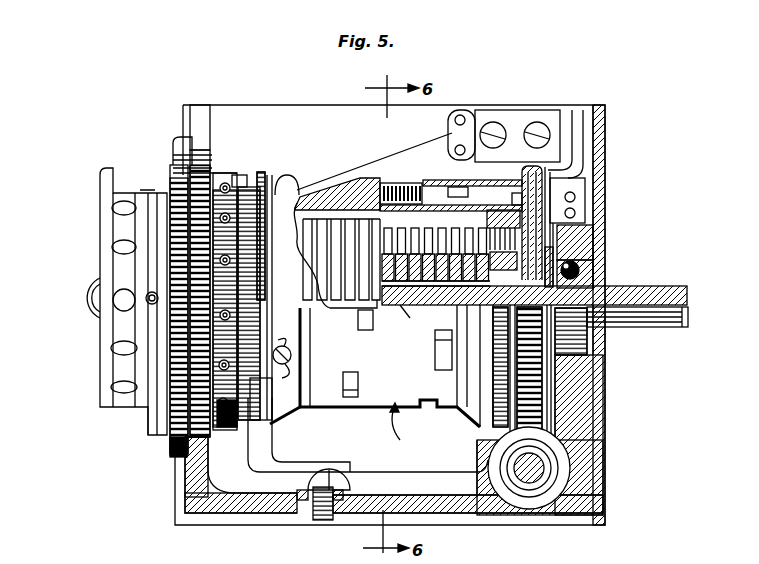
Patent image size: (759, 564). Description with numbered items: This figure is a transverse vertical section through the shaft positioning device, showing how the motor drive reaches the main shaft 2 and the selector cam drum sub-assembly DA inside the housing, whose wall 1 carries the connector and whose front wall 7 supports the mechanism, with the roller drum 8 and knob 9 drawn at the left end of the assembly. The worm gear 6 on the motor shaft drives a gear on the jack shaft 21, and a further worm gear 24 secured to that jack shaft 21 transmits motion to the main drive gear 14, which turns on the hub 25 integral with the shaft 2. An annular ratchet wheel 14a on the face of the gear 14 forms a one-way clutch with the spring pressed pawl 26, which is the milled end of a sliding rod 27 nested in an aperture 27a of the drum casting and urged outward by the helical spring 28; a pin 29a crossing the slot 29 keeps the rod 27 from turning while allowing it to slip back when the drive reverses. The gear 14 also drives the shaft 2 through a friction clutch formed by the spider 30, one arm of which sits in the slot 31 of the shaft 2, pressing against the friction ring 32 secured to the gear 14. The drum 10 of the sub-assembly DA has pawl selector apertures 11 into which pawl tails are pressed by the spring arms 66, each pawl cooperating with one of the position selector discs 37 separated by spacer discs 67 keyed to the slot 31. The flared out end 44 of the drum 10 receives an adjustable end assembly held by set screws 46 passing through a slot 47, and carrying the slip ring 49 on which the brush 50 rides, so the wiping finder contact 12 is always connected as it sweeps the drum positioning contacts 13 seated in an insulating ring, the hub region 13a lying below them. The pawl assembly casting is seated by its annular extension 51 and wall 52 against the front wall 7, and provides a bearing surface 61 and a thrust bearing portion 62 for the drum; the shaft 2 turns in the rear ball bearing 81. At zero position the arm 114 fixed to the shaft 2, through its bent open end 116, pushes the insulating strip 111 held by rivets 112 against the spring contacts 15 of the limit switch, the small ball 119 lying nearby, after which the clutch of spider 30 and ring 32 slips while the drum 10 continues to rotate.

The wall 1 is at (603, 394).
The main shaft 2 is at (684, 326).
The worm gear 6 is at (446, 234).
The front wall 7 is at (178, 485).
The roller drum 8 is at (150, 405).
The knob 9 is at (80, 291).
The selector cam drum 10 is at (341, 373).
The pawl selector apertures 11 is at (433, 342).
The wiping finder contact 12 is at (245, 176).
The drum positioning contacts 13 is at (222, 258).
The gear hub 13a is at (218, 432).
The main drive gear 14 is at (535, 405).
The annular ratchet wheel 14a is at (493, 430).
The spring contacts 15 is at (572, 160).
The jack shaft 21 is at (531, 470).
The worm gear 24 is at (572, 476).
The hub 25 is at (457, 310).
The spring pressed pawl 26 is at (522, 190).
The sliding rod 27 is at (437, 192).
The aperture 27a is at (423, 187).
The helical spring 28 is at (408, 187).
The slot 29 is at (413, 195).
The pin 29a is at (465, 180).
The spider 30 is at (576, 213).
The slot 31 is at (686, 290).
The annular ring 32 is at (576, 197).
The position selector discs 37 is at (373, 314).
The flared out end 44 is at (284, 403).
The set screws 46 is at (272, 399).
The slot 47 is at (282, 342).
The annular metal ring 49 is at (292, 178).
The brush 50 is at (274, 428).
The annular extension 51 is at (176, 143).
The wall 52 is at (203, 150).
The bearing surface 61 is at (487, 225).
The reduced annular portion 62 is at (512, 200).
The spring arms 66 is at (370, 238).
The spacer discs 67 is at (414, 320).
The ball bearing 81 is at (580, 348).
The strip of insulation 111 is at (603, 162).
The rivets 112 is at (586, 181).
The arm 114 is at (580, 241).
The bent open end 116 is at (592, 229).
The ball 119 is at (580, 259).
The selector cam drum sub-assembly DA is at (405, 428).